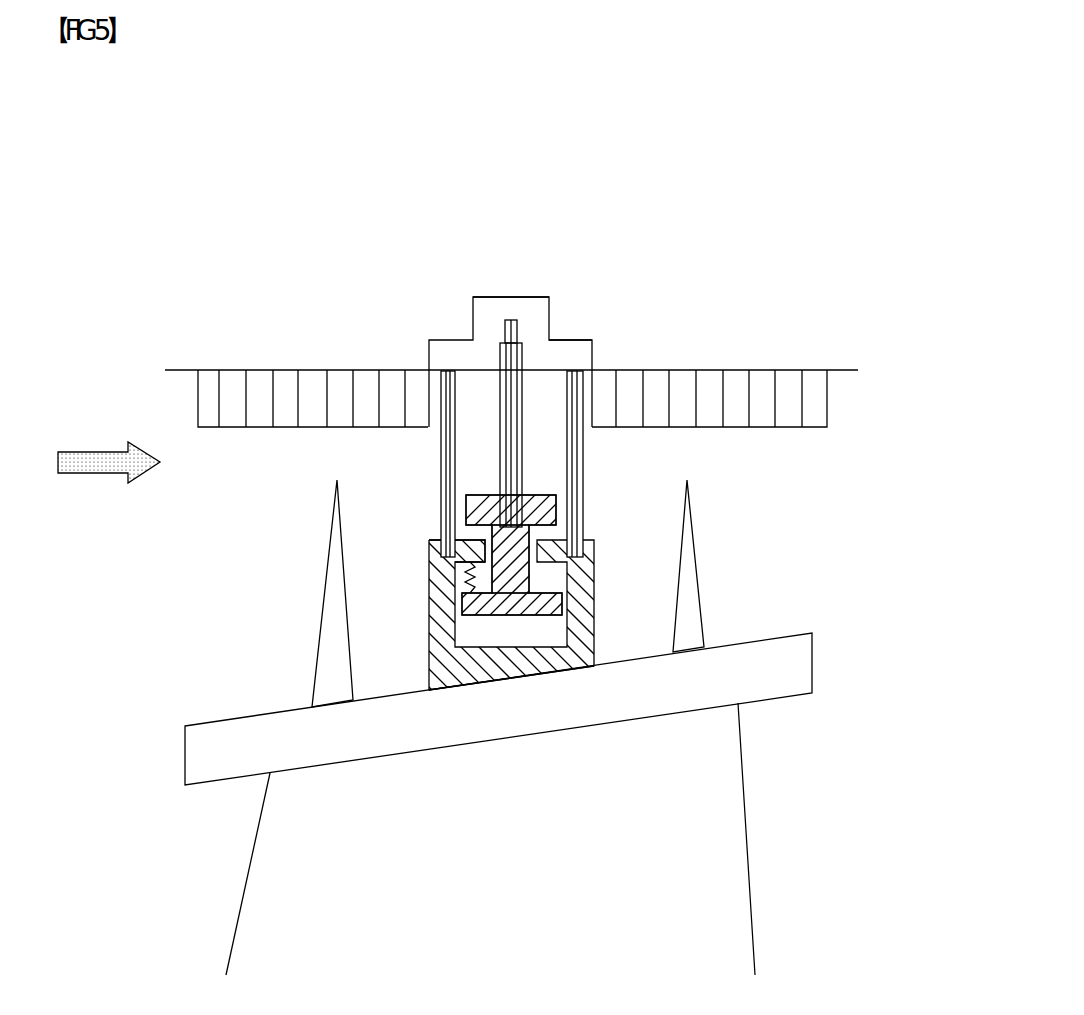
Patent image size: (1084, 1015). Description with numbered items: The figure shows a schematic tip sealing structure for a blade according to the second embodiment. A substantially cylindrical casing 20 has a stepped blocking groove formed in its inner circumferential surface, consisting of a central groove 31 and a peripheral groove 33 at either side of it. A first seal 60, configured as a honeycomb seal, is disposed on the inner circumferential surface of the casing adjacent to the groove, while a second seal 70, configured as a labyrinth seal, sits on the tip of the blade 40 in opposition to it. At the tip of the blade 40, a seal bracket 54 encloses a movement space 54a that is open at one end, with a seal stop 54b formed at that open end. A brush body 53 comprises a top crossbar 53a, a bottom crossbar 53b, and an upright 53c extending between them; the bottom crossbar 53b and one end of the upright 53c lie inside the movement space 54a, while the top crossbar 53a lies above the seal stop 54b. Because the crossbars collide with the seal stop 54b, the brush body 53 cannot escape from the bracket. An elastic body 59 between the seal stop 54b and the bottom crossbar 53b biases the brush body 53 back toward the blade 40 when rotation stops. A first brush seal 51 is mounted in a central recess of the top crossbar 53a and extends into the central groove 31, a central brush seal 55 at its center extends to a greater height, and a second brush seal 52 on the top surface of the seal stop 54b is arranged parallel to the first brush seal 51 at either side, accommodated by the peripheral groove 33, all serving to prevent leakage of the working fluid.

The casing 20 is at (735, 370).
The first seal 60 is at (810, 403).
The central groove 31 is at (507, 297).
The peripheral groove 33 is at (572, 340).
The central brush seal 55 is at (505, 330).
The first brush seal 51 is at (518, 447).
The second brush seal 52 is at (447, 455).
The brush body 53 is at (822, 500).
The top crossbar 53a is at (557, 502).
The upright 53c is at (510, 570).
The bottom crossbar 53b is at (547, 606).
The seal bracket 54 is at (445, 615).
The movement space 54a is at (473, 637).
The seal stop 54b is at (429, 540).
The elastic body 59 is at (463, 570).
The second seal 70 is at (690, 635).
The blade 40 is at (717, 815).